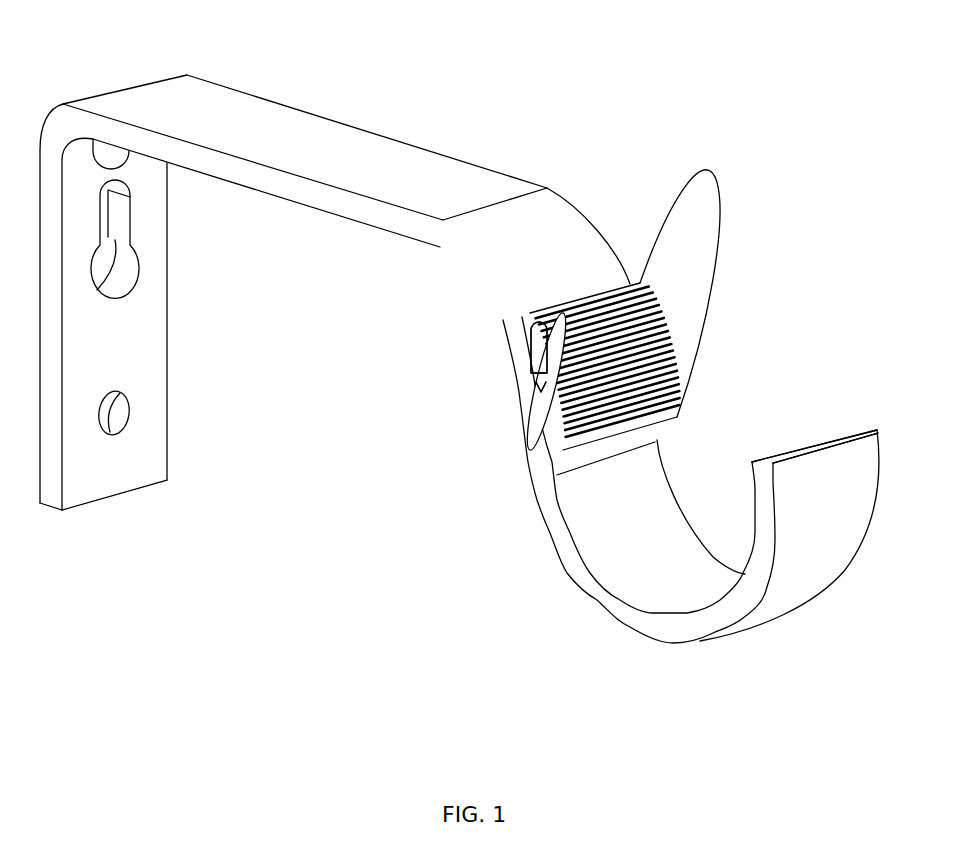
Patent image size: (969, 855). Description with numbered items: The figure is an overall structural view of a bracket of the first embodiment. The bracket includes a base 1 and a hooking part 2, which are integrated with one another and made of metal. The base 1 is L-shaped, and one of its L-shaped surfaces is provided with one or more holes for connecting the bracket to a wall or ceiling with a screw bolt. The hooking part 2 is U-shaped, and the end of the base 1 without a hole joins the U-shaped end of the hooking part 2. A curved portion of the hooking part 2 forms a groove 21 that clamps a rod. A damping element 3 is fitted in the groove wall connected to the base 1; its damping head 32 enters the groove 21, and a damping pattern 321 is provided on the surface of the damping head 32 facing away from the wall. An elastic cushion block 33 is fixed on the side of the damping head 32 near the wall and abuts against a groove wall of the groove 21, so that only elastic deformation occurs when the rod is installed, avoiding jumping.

The base 1 is at (223, 117).
The hooking part 2 is at (550, 522).
The groove 21 is at (710, 455).
The damping element 3 is at (422, 364).
The damping head 32 is at (540, 330).
The elastic cushion block 33 is at (545, 387).
The damping pattern 321 is at (632, 315).